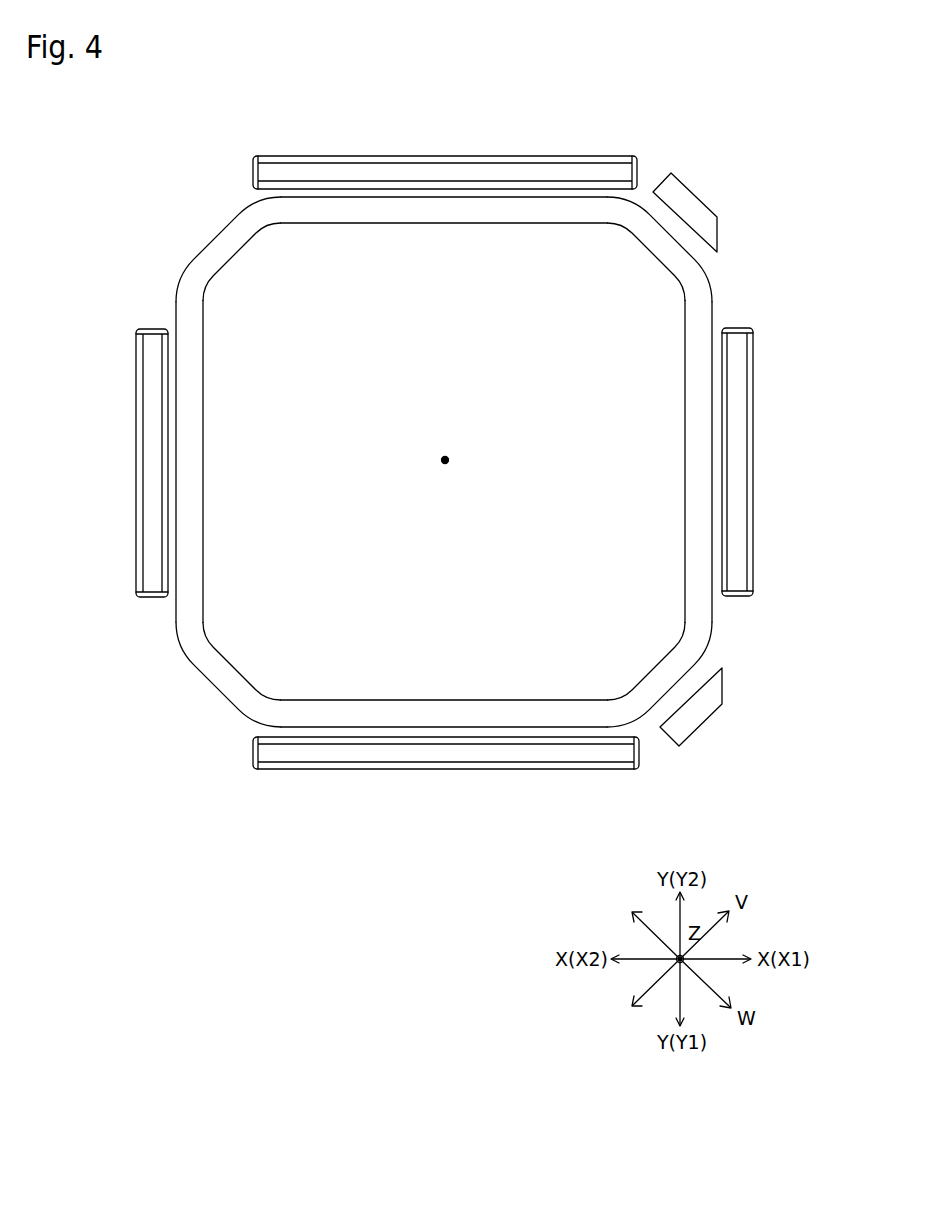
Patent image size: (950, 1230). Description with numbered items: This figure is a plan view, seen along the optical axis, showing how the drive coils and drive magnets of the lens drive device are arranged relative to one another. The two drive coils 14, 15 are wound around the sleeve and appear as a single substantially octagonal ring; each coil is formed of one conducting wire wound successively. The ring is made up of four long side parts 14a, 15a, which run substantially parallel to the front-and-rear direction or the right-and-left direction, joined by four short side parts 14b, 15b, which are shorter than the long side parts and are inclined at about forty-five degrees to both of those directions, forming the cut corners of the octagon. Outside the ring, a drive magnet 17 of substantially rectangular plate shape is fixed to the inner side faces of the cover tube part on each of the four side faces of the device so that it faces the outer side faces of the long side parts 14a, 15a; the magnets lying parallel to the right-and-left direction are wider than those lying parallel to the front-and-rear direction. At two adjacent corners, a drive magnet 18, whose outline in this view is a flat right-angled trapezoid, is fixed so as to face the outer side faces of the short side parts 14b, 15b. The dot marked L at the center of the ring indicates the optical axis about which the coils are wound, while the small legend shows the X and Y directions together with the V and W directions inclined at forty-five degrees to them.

The drive coil 14 is at (214, 238).
The drive coil 15 is at (433, 462).
The long side part 14a is at (434, 224).
The long side part 15a is at (444, 462).
The short side part 14b is at (234, 259).
The short side part 15b is at (444, 462).
The drive magnet 17 is at (444, 155).
The drive magnet 18 is at (697, 193).
The center axis L is at (444, 452).